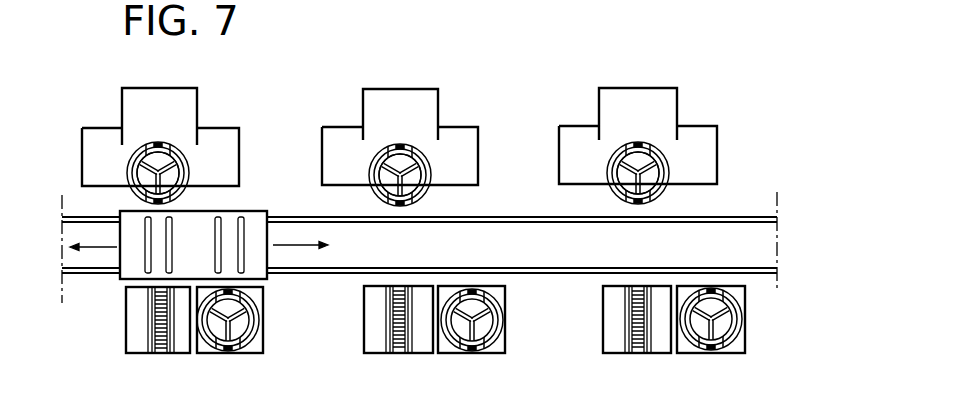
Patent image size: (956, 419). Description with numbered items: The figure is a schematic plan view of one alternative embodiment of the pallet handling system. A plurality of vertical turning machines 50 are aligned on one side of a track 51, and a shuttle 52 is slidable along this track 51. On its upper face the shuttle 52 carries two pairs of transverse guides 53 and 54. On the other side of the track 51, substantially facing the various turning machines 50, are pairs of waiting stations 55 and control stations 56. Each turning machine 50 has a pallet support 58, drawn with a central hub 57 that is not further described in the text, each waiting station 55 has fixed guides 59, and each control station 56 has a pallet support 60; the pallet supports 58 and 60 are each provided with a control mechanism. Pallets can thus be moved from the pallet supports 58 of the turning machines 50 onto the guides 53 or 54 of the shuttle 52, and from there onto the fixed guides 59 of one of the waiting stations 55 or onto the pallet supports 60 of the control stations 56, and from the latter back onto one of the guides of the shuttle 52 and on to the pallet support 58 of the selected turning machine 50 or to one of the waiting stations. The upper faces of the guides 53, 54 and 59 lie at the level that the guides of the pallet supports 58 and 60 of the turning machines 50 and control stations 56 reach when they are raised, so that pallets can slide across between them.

The vertical turning machine 50 is at (206, 101).
The track 51 is at (523, 263).
The shuttle 52 is at (253, 237).
The transverse guides 53 is at (169, 250).
The transverse guides 54 is at (242, 228).
The waiting station 55 is at (181, 333).
The control station 56 is at (254, 346).
The hub 57 is at (157, 165).
The pallet support 58 is at (187, 168).
The fixed guides 59 is at (168, 353).
The pallet support 60 is at (253, 332).